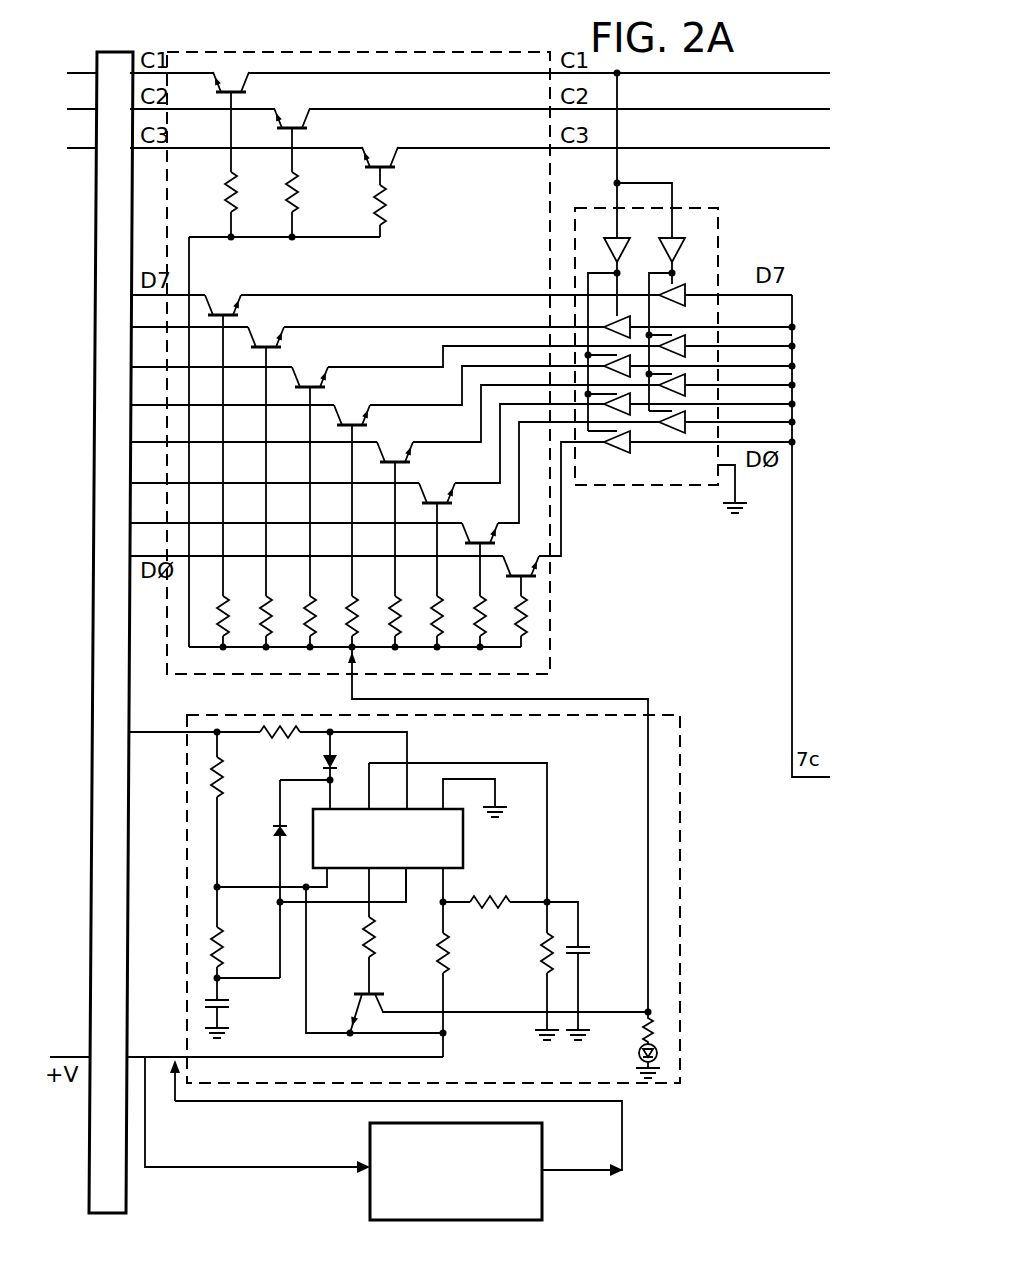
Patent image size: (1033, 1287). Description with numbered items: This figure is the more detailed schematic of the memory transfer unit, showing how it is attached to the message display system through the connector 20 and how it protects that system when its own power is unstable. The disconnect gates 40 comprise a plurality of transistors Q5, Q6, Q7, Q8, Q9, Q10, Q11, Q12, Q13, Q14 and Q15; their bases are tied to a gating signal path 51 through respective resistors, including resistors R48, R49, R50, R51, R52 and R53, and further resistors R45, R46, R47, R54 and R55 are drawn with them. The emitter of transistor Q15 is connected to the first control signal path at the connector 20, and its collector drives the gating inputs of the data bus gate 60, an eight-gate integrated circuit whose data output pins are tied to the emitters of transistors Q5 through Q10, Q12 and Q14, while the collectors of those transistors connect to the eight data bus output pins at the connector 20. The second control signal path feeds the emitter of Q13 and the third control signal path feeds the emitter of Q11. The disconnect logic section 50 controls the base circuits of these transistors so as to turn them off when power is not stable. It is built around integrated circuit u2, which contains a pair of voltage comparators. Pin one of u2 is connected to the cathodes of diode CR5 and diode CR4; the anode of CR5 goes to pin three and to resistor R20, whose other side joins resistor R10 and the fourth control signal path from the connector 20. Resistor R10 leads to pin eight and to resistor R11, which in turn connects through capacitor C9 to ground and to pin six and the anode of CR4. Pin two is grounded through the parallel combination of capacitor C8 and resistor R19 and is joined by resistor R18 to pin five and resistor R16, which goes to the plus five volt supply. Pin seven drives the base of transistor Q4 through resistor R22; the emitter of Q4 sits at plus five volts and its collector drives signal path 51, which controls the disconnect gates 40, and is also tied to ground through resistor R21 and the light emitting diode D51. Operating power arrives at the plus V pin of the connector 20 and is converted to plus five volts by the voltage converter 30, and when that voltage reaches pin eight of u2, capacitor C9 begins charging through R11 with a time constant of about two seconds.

The connector 20 is at (127, 462).
The voltage converter 30 is at (542, 1200).
The disconnect gates 40 is at (502, 52).
The disconnect logic section 50 is at (682, 892).
The gating signal path 51 is at (352, 691).
The data bus gate 60 is at (617, 487).
The transistor Q4 is at (366, 994).
The transistor Q5 is at (232, 294).
The transistor Q6 is at (260, 336).
The transistor Q7 is at (312, 373).
The transistor Q8 is at (354, 411).
The transistor Q9 is at (396, 451).
The transistor Q10 is at (432, 489).
The transistor Q11 is at (400, 160).
The transistor Q12 is at (462, 528).
The transistor Q13 is at (312, 125).
The transistor Q14 is at (542, 575).
The transistor Q15 is at (250, 91).
The resistor R10 is at (240, 829).
The resistor R11 is at (240, 963).
The resistor R16 is at (468, 962).
The resistor R18 is at (510, 921).
The resistor R19 is at (532, 971).
The resistor R20 is at (277, 745).
The resistor R21 is at (658, 1030).
The resistor R22 is at (391, 931).
The resistor R45 is at (224, 186).
The resistor R46 is at (314, 204).
The resistor R47 is at (406, 211).
The resistor R48 is at (212, 620).
The resistor R49 is at (256, 620).
The resistor R50 is at (300, 620).
The resistor R51 is at (348, 612).
The resistor R52 is at (390, 612).
The resistor R53 is at (430, 612).
The resistor R54 is at (476, 622).
The resistor R55 is at (537, 624).
The diode CR4 is at (254, 879).
The diode CR5 is at (354, 770).
The capacitor C8 is at (593, 990).
The capacitor C9 is at (231, 1015).
The light emitting diode D51 is at (657, 1055).
The integrated circuit u2 is at (404, 852).